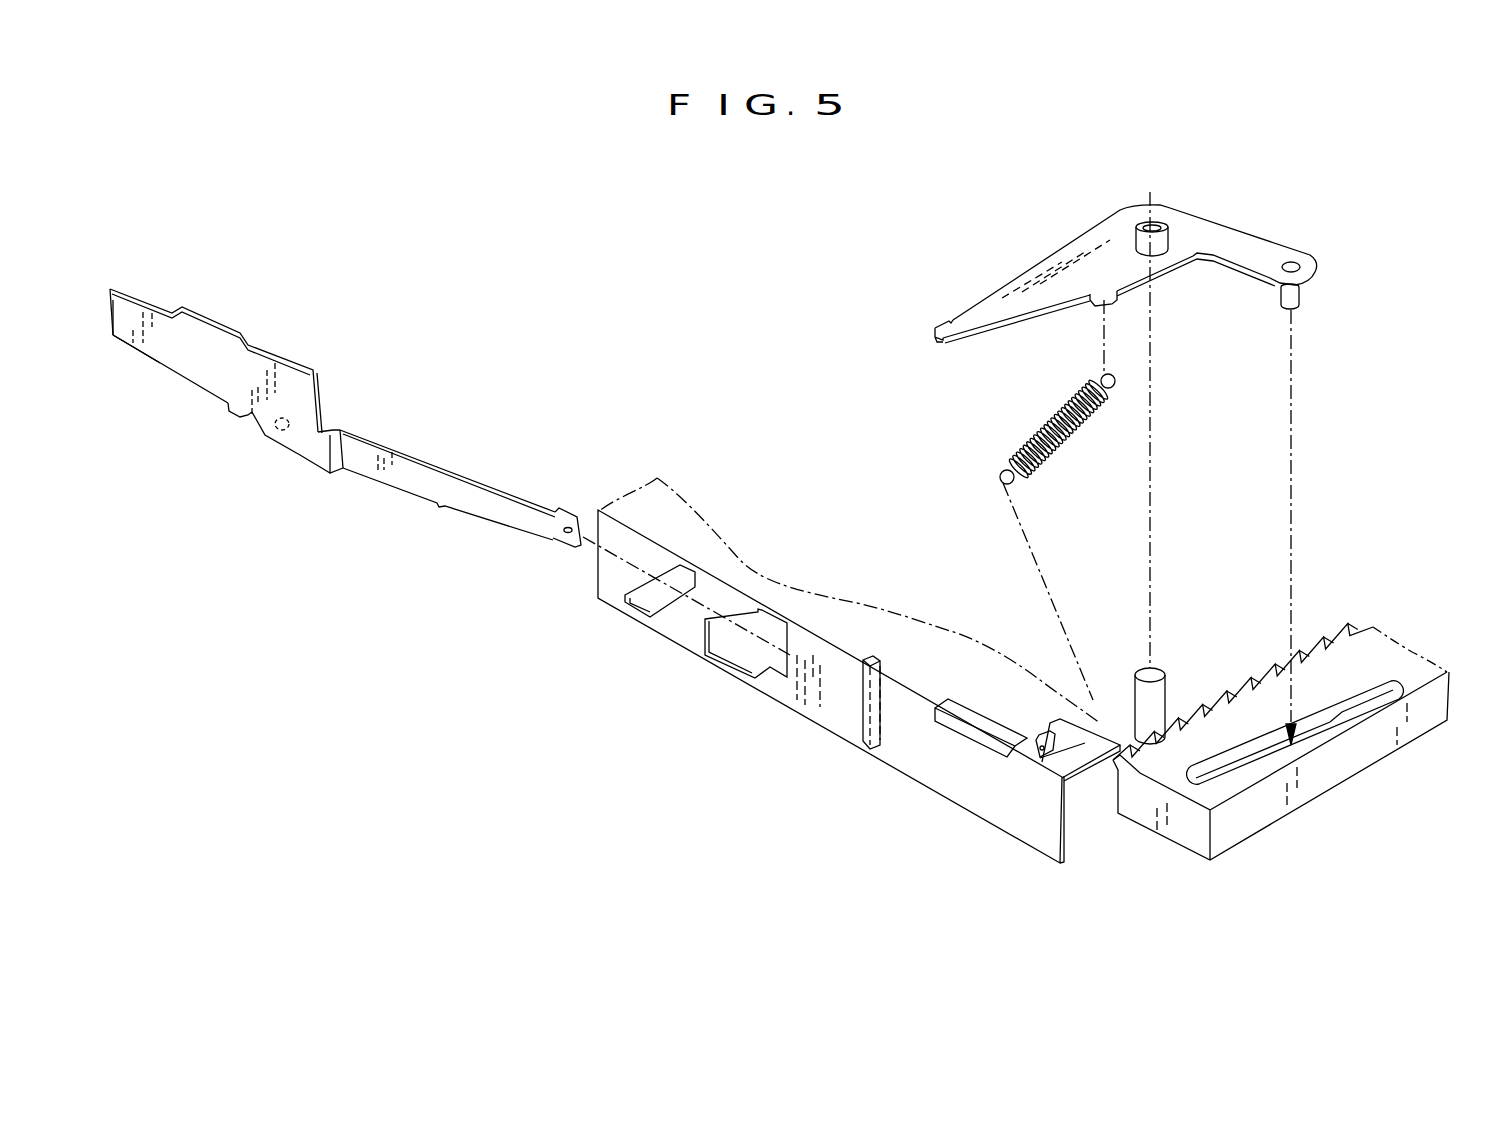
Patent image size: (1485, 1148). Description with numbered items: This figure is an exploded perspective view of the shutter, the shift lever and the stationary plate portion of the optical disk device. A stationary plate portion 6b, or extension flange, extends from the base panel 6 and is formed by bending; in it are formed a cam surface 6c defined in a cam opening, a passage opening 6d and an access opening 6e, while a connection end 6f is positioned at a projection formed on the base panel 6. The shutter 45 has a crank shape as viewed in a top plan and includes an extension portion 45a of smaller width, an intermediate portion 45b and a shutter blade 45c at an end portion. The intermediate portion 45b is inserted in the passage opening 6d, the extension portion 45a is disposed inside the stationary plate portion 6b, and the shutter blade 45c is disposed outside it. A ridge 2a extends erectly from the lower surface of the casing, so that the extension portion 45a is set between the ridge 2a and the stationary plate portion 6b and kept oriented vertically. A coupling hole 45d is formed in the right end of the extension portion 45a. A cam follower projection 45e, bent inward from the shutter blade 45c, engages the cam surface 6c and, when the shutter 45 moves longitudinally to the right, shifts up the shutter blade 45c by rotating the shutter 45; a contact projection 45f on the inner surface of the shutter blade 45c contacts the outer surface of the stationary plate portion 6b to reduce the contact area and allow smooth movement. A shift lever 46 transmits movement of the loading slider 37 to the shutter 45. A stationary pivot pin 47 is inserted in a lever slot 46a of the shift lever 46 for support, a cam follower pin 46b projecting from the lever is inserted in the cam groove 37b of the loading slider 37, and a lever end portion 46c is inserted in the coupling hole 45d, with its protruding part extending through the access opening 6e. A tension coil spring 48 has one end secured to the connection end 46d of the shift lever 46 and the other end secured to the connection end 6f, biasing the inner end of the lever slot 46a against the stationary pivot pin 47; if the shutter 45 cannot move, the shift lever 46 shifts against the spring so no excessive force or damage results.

The shutter 45 is at (285, 377).
The extension portion 45a is at (512, 513).
The intermediate portion 45b is at (332, 430).
The shutter blade 45c is at (160, 347).
The coupling hole 45d is at (567, 541).
The cam follower projection 45e is at (243, 418).
The contact projection 45f is at (289, 432).
The base panel 6 is at (851, 706).
The stationary plate portion 6b is at (808, 702).
The cam surface 6c is at (648, 603).
The passage opening 6d is at (727, 645).
The access opening 6e is at (968, 722).
The connection end 6f is at (1035, 746).
The ridge 2a is at (867, 752).
The shift lever 46 is at (1239, 247).
The lever slot 46a is at (1147, 225).
The cam follower pin 46b is at (1281, 296).
The lever end portion 46c is at (938, 327).
The connection end 46d is at (1100, 306).
The stationary pivot pin 47 is at (1158, 707).
The tension coil spring 48 is at (1040, 427).
The loading slider 37 is at (1250, 815).
The cam groove 37b is at (1345, 713).